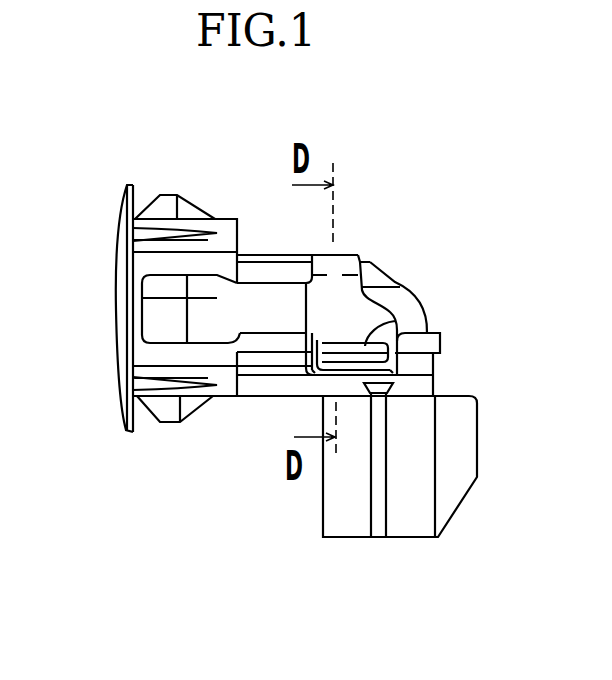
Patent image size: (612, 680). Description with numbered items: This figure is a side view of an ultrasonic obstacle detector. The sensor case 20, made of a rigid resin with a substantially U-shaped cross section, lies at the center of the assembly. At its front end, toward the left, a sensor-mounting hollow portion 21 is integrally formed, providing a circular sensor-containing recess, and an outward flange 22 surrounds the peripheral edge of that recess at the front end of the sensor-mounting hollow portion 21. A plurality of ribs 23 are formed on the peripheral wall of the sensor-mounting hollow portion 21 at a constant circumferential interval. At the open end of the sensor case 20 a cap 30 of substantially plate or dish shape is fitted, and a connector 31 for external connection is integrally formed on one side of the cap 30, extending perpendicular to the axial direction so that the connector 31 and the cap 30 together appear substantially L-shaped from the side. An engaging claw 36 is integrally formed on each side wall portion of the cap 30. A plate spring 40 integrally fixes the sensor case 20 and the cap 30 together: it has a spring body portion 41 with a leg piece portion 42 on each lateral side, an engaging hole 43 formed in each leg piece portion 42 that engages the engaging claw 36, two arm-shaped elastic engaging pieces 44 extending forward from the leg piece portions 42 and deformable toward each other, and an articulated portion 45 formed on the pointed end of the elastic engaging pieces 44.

The sensor case 20 is at (259, 258).
The sensor-mounting hollow portion 21 is at (152, 263).
The outward flange 22 is at (118, 200).
The ribs 23 is at (160, 198).
The cap 30 is at (247, 406).
The connector for external connection 31 is at (408, 522).
The engaging claw 36 is at (392, 371).
The plate spring 40 is at (359, 244).
The spring body portion 41 is at (370, 261).
The leg piece portion 42 is at (346, 314).
The engaging hole 43 is at (372, 323).
The elastic engaging pieces 44 is at (215, 298).
The articulated portion 45 is at (167, 322).